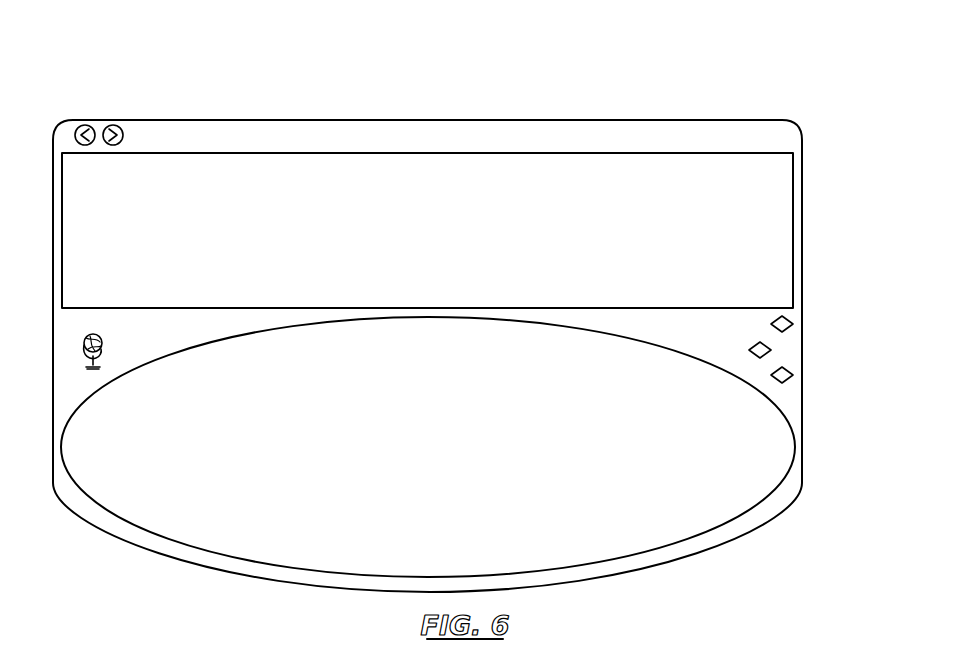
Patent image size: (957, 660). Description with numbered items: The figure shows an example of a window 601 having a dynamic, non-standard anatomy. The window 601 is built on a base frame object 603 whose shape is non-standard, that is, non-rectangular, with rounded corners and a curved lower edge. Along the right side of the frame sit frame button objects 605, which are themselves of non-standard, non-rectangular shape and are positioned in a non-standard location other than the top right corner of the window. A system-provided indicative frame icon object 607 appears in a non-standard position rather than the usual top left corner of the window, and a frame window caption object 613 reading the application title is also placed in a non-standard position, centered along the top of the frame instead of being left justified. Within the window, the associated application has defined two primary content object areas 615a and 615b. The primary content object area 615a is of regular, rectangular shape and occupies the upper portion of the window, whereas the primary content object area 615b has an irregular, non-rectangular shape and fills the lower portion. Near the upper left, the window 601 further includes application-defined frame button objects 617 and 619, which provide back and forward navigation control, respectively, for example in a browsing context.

The window 601 is at (805, 273).
The base frame object 603 is at (723, 127).
The frame button objects 605 is at (793, 324).
The system-provided indicative frame icon object 607 is at (90, 335).
The frame window caption object 613 is at (413, 127).
The primary content object area 615a is at (632, 195).
The primary content object area 615b is at (760, 443).
The application-defined frame button object 617 is at (75, 122).
The application-defined frame button object 619 is at (110, 122).